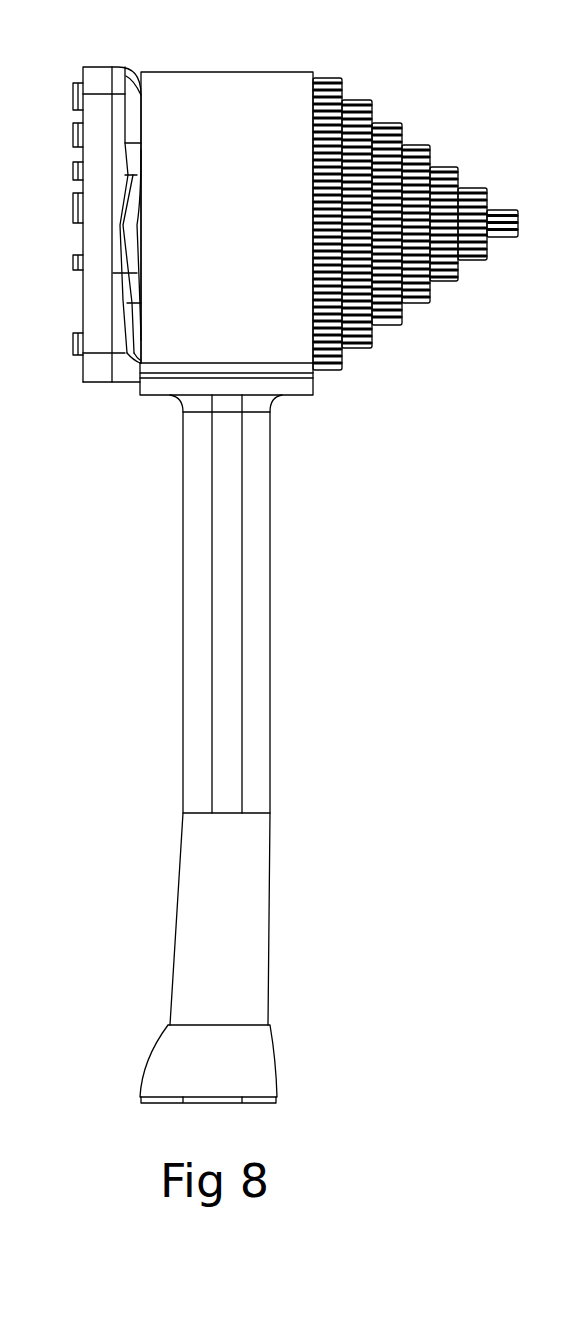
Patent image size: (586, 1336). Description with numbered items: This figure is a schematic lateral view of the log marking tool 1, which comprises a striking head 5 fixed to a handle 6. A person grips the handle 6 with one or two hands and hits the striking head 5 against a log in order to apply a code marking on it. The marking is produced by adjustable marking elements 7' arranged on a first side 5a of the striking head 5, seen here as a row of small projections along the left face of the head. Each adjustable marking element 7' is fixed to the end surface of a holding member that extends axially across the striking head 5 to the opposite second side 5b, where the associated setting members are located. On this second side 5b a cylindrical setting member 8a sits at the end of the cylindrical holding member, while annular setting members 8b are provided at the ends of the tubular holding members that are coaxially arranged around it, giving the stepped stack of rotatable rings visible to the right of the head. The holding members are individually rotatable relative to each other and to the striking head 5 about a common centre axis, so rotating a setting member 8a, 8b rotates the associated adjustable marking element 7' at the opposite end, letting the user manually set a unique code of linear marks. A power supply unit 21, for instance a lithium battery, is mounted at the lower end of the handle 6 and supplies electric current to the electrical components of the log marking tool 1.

The log marking tool 1 is at (374, 49).
The striking head 5 is at (254, 82).
The first side of the striking head 5a is at (75, 366).
The second side of the striking head 5b is at (393, 353).
The handle 6 is at (262, 595).
The adjustable marking element 7' is at (41, 219).
The cylindrical setting member 8a is at (503, 212).
The annular setting member 8b is at (332, 76).
The power supply unit 21 is at (262, 1067).